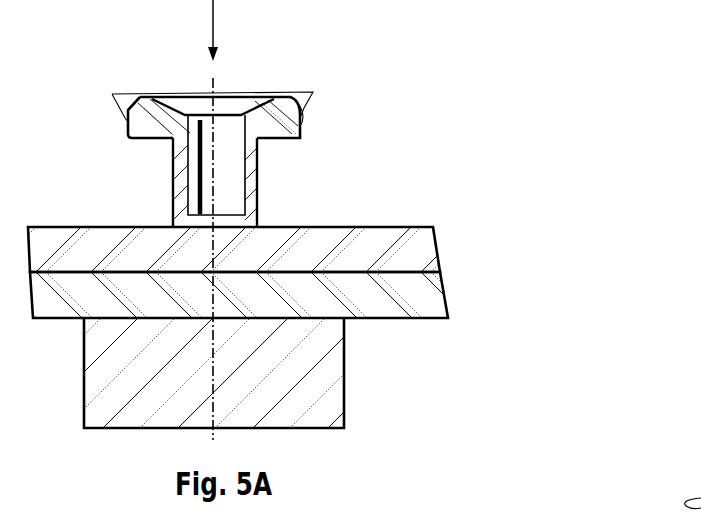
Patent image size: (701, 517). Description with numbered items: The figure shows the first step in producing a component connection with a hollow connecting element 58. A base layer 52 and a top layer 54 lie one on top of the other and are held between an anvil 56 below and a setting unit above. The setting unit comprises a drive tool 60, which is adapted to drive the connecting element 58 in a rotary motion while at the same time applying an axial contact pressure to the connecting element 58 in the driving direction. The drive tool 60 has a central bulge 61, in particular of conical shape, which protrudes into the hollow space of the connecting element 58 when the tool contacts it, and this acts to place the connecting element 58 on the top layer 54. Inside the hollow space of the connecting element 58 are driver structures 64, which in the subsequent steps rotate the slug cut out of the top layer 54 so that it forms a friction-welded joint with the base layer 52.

The base layer 52 is at (423, 305).
The top layer 54 is at (440, 257).
The anvil 56 is at (330, 400).
The connecting element 58 is at (312, 156).
The drive tool 60 is at (338, 94).
The central bulge 61 is at (148, 128).
The driver structures 64 is at (197, 190).